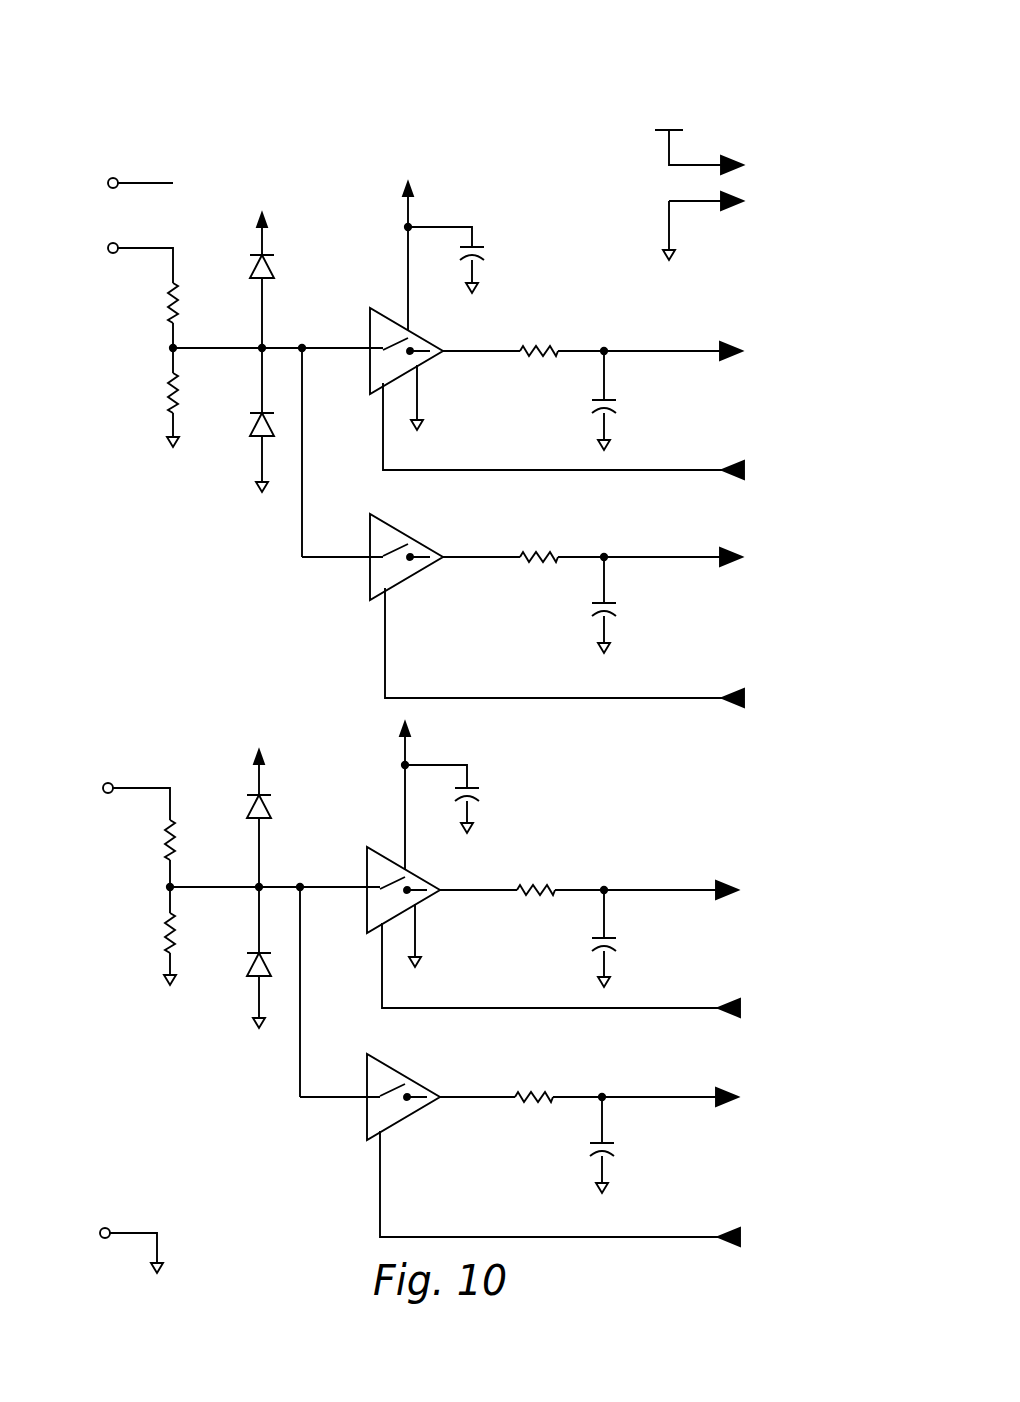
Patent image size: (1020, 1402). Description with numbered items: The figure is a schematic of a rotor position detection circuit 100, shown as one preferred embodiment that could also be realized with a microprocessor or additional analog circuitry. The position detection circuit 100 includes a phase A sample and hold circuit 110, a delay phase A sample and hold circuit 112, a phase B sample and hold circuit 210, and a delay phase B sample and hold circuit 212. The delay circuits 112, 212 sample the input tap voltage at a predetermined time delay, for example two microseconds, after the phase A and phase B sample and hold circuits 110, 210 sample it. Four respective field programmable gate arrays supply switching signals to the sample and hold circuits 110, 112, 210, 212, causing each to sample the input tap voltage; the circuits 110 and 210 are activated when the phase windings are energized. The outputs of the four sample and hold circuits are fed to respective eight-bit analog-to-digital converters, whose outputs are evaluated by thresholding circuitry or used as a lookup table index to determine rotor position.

The rotor position detection circuit 100 is at (607, 66).
The phase A sample and hold circuit 110 is at (783, 440).
The delay phase A sample and hold circuit 112 is at (783, 645).
The phase B sample and hold circuit 210 is at (780, 982).
The delay phase B sample and hold circuit 212 is at (780, 1187).